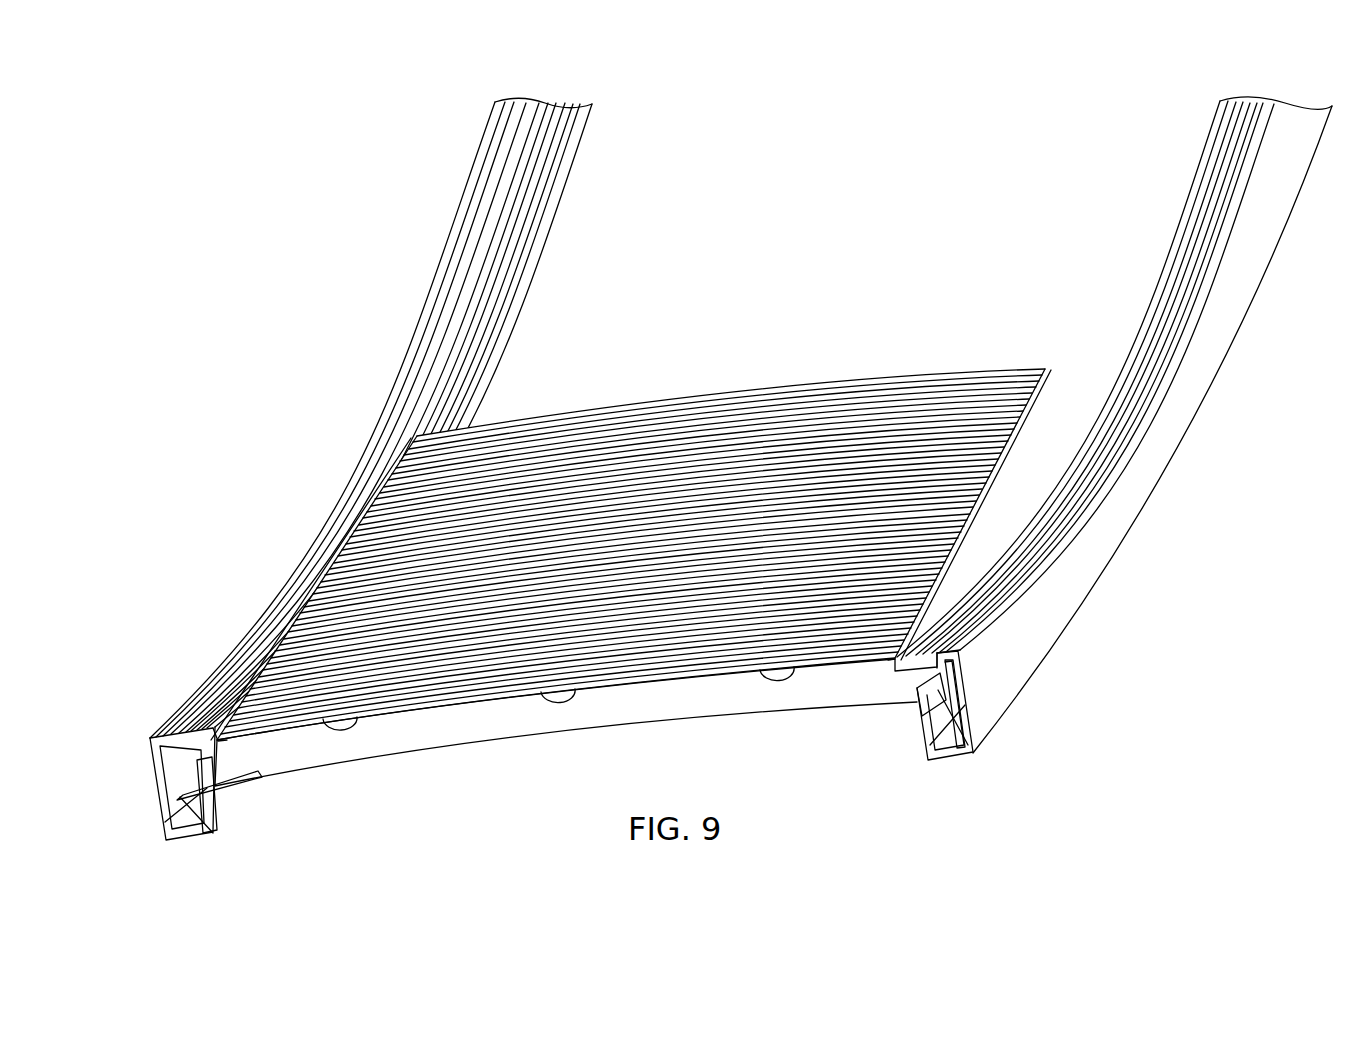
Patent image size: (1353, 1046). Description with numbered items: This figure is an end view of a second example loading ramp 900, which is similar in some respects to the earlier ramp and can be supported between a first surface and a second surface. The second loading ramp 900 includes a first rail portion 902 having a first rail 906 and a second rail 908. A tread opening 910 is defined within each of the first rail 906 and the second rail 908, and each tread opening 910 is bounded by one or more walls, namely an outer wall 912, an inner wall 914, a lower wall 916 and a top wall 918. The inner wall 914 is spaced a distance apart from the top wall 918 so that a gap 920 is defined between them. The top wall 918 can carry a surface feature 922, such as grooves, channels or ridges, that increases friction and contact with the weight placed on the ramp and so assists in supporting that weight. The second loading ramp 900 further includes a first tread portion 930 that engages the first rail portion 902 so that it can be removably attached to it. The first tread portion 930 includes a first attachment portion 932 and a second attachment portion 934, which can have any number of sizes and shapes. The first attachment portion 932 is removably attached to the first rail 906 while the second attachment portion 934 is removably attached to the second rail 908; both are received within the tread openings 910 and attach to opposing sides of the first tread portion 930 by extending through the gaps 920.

The second loading ramp 900 is at (457, 137).
The first rail portion 902 is at (931, 122).
The first rail 906 is at (437, 281).
The second rail 908 is at (1228, 369).
The tread opening 910 is at (188, 747).
The outer wall 912 is at (167, 757).
The inner wall 914 is at (210, 783).
The lower wall 916 is at (202, 832).
The top wall 918 is at (185, 732).
The gap 920 is at (233, 735).
The surface feature 922 is at (272, 590).
The first tread portion 930 is at (588, 708).
The first attachment portion 932 is at (188, 782).
The second attachment portion 934 is at (937, 677).